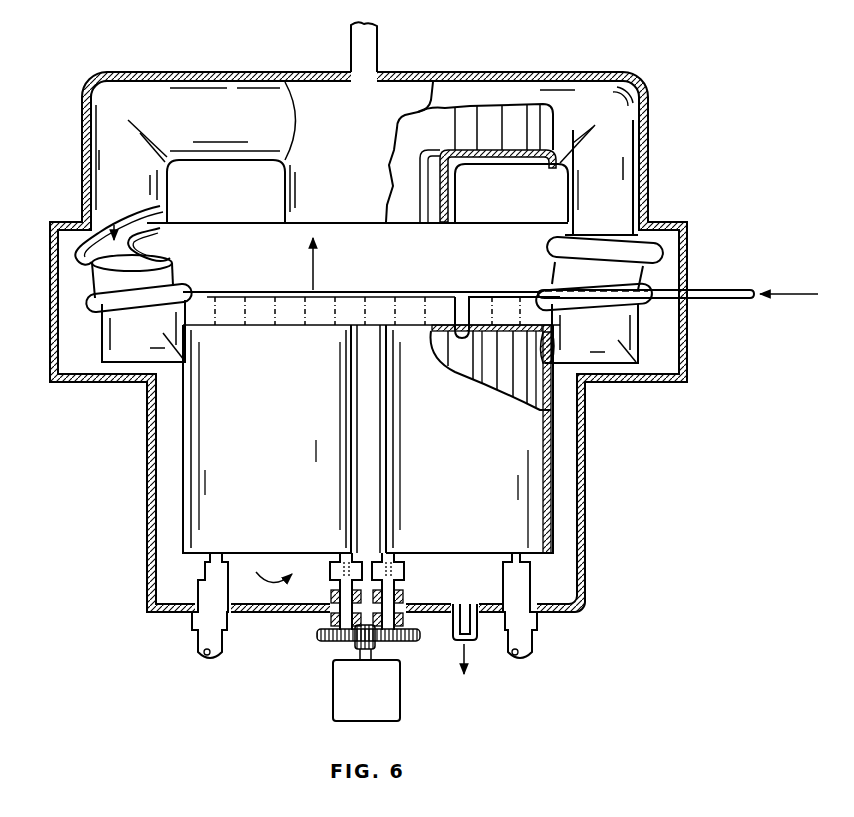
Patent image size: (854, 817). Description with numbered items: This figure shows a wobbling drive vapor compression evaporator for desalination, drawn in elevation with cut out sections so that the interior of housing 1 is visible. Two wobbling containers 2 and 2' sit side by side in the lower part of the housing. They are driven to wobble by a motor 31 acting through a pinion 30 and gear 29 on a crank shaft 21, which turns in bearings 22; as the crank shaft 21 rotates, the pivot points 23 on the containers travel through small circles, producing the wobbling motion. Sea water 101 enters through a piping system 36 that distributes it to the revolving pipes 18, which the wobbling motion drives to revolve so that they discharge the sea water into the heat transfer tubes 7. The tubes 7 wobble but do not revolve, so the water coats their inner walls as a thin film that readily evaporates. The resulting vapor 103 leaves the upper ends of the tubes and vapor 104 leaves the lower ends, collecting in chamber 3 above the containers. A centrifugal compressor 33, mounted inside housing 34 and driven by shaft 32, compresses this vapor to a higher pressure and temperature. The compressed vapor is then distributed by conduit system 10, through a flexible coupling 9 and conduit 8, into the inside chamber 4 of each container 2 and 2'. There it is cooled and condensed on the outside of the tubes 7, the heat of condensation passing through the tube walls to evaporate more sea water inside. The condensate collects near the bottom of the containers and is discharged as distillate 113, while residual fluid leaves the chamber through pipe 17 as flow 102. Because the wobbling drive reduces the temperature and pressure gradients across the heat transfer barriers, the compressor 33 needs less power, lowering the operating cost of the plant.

The housing 1 is at (584, 468).
The container 2 is at (469, 439).
The container 2' is at (267, 439).
The chamber 3 is at (359, 388).
The inside chamber 4 is at (536, 404).
The heat transfer tube 7 is at (463, 372).
The conduit 8 is at (130, 284).
The flexible coupling 9 is at (184, 277).
The conduit system 10 is at (167, 193).
The pipe 17 is at (477, 628).
The revolving pipe 18 is at (453, 309).
The crank shaft 21 is at (404, 583).
The bearing 22 is at (404, 600).
The pivot point 23 is at (405, 566).
The gear 29 is at (317, 634).
The pinion 30 is at (355, 647).
The motor 31 is at (366, 690).
The shaft 32 is at (378, 38).
The centrifugal compressor 33 is at (423, 189).
The housing 34 is at (449, 178).
The piping system 36 is at (646, 283).
The sea water 101 is at (789, 281).
The outflow arrow 102 is at (466, 671).
The vapor 103 is at (335, 264).
The vapor 104 is at (311, 431).
The distillate 113 is at (211, 663).